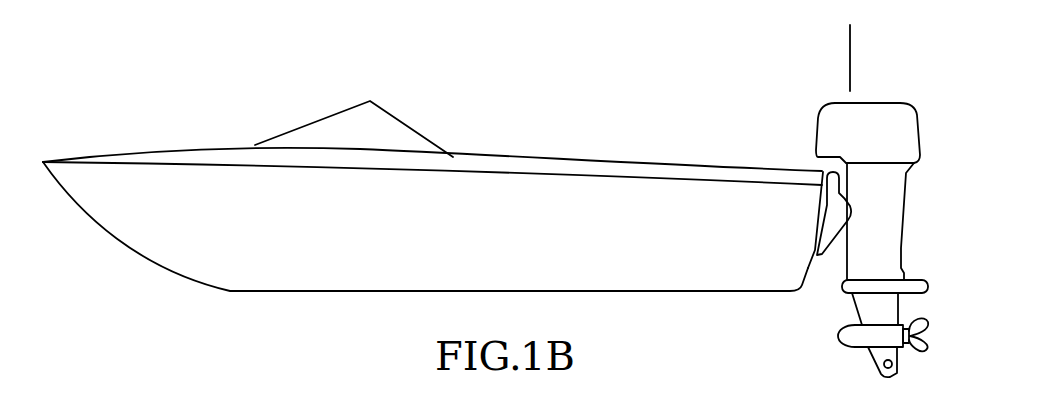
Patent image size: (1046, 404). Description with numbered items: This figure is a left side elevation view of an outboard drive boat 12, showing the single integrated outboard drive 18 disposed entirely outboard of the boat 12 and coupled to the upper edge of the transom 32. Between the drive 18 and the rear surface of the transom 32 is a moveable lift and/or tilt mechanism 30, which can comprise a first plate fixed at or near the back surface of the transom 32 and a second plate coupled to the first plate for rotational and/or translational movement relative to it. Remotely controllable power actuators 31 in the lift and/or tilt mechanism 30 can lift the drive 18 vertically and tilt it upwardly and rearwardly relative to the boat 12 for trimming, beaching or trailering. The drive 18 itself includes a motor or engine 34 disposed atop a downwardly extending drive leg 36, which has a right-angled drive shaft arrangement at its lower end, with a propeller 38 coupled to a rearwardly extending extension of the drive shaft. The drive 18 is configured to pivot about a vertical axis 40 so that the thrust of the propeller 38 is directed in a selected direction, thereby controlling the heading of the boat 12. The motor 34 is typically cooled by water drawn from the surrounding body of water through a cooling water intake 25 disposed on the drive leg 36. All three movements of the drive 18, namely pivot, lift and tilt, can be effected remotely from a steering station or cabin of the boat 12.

The outboard drive boat 12 is at (176, 150).
The integrated outboard drive 18 is at (859, 214).
The cooling water intake 25 is at (884, 366).
The lift and/or tilt (L/T) mechanism 30 is at (818, 225).
The remotely controllable power actuators 31 is at (827, 193).
The transom 32 is at (817, 284).
The motor or engine 34 is at (848, 125).
The drive leg 36 is at (876, 199).
The propeller 38 is at (925, 352).
The vertical axis 40 is at (852, 57).